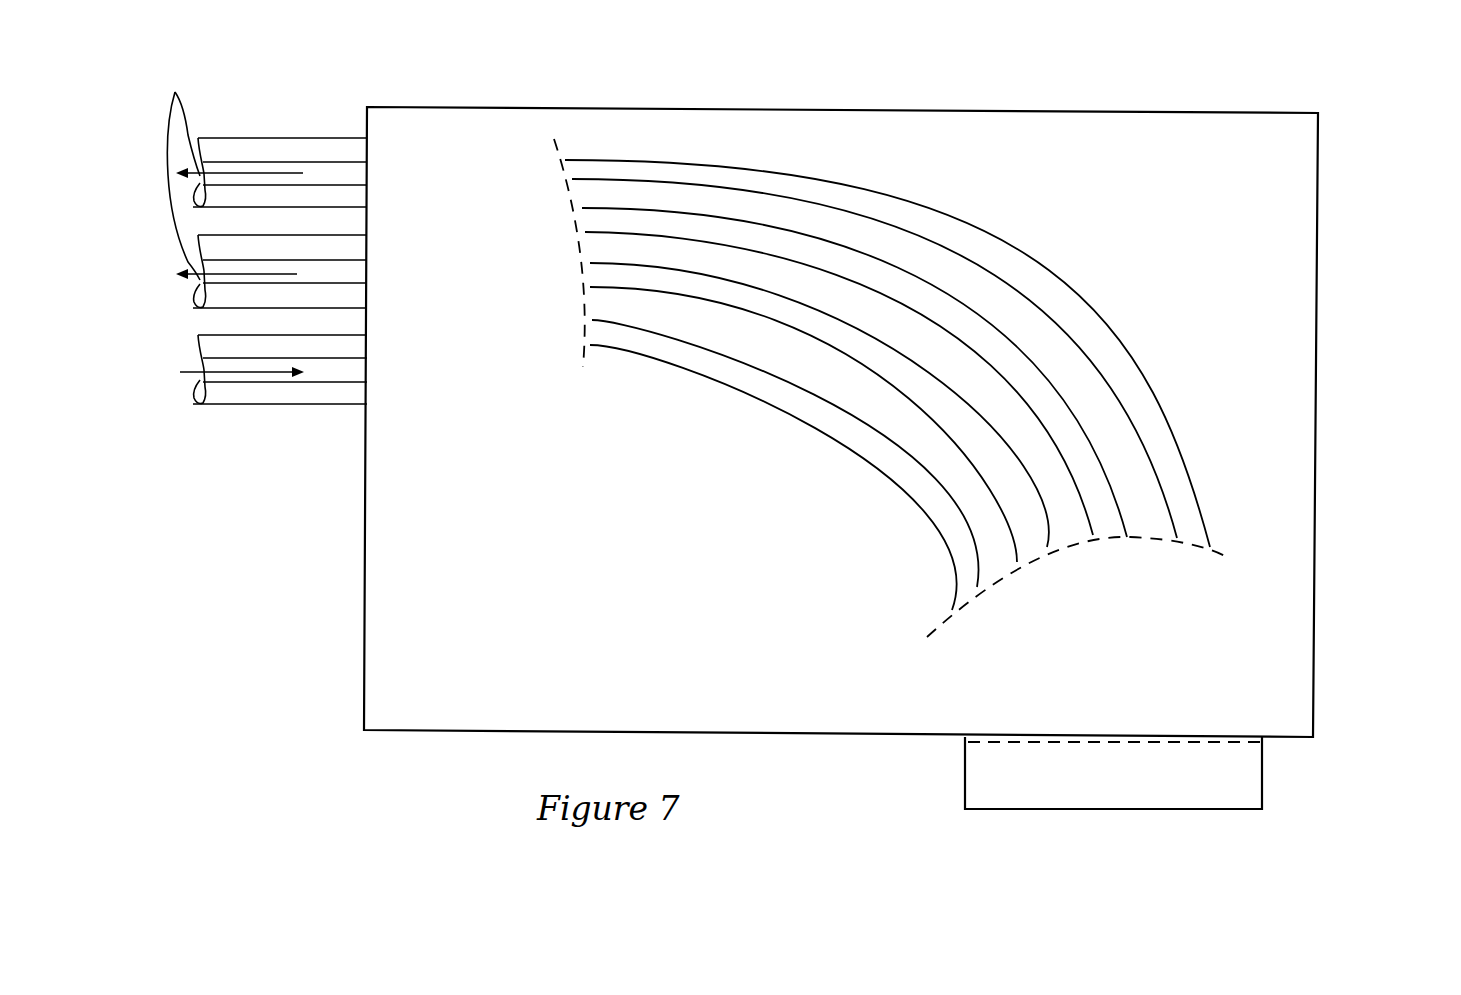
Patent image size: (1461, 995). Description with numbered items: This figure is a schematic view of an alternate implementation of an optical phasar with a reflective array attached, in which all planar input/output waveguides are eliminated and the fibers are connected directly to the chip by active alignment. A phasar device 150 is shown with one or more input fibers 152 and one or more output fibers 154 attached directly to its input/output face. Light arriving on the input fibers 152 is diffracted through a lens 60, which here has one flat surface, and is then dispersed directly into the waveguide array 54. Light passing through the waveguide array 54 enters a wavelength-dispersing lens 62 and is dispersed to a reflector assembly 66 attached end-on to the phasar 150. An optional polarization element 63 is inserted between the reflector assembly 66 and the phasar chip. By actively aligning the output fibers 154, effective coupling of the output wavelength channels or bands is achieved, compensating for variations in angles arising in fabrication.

The phasar device 150 is at (1360, 161).
The waveguide array 54 is at (1040, 196).
The lens 60 is at (476, 335).
The wavelength-dispersing lens 62 is at (1170, 618).
The polarization element 63 is at (1263, 742).
The reflector assembly 66 is at (1263, 775).
The input fibers 152 is at (200, 370).
The output fibers 154 is at (211, 228).